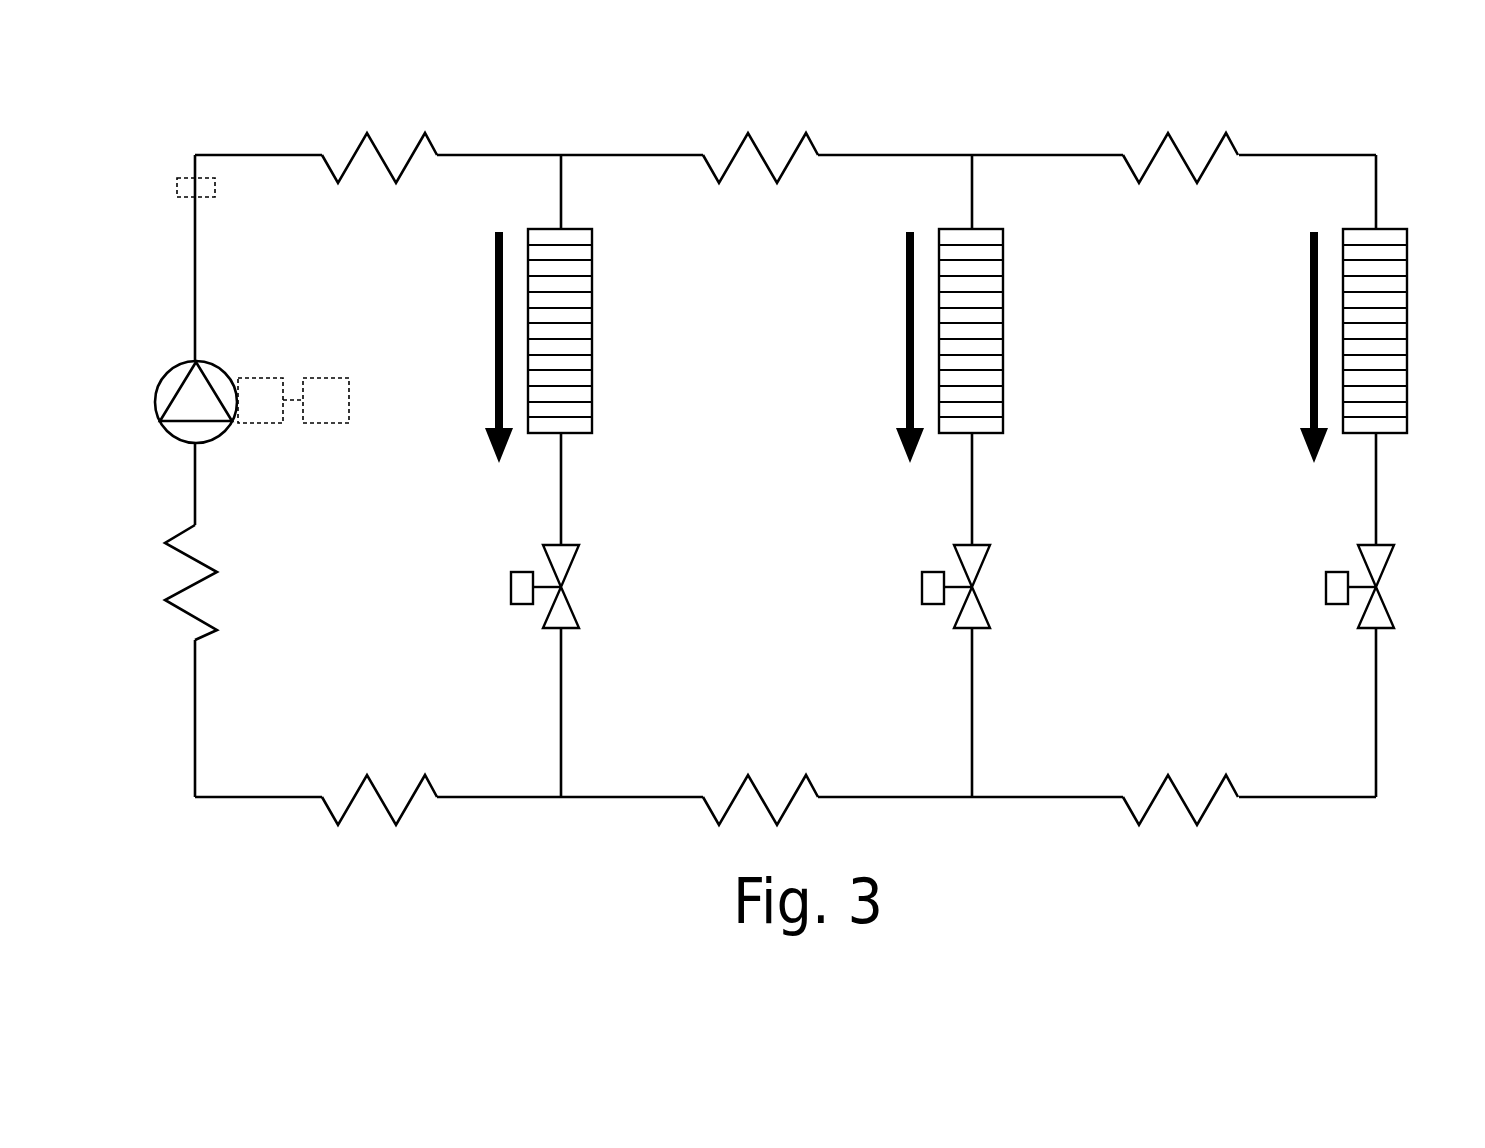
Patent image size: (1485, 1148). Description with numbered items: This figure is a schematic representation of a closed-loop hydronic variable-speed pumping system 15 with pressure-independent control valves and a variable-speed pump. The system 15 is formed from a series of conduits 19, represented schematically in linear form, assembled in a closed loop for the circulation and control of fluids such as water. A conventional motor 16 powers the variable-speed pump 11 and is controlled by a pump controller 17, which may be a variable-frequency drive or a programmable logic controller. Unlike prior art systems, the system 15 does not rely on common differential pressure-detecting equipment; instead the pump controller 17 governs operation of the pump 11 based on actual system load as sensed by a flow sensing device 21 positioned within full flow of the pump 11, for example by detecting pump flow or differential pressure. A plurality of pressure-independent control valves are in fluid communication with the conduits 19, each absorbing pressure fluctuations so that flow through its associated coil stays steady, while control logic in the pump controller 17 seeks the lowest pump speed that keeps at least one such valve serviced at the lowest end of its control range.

The variable-speed pump 11 is at (158, 388).
The variable-speed pumping system 15 is at (228, 115).
The motor 16 is at (260, 425).
The pump controller 17 is at (328, 425).
The conduits 19 is at (636, 152).
The flow sensing device 21 is at (215, 186).